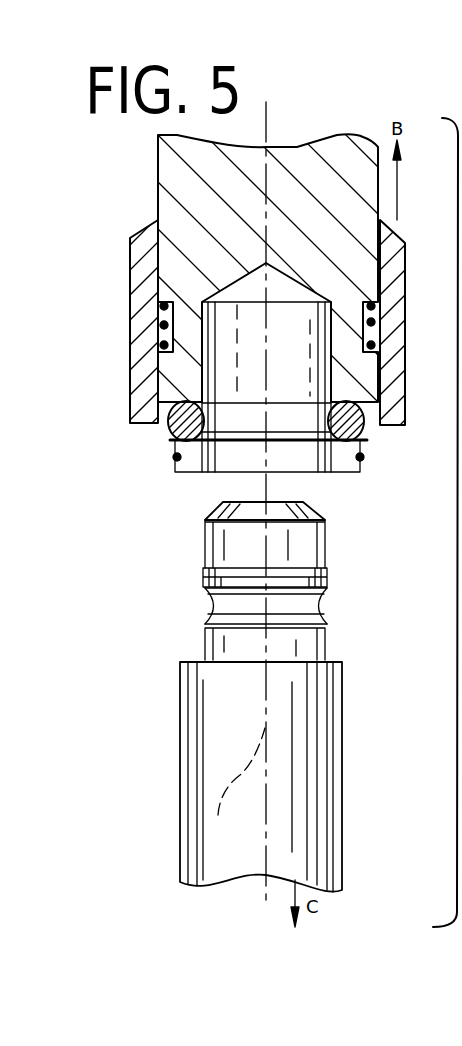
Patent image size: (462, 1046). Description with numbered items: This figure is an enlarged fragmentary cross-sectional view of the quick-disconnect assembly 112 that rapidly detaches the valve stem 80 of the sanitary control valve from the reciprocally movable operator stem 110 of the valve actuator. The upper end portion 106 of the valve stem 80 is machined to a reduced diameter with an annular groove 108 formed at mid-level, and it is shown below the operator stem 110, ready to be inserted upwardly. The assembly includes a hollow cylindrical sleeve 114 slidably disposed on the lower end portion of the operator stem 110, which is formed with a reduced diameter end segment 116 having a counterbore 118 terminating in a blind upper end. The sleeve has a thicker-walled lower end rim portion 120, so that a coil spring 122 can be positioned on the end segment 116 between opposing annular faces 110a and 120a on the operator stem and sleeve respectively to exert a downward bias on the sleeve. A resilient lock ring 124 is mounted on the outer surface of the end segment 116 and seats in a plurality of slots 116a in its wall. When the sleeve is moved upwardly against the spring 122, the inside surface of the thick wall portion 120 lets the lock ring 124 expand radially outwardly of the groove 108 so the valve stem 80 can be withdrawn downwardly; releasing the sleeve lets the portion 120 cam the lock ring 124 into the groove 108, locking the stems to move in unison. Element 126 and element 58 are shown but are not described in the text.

The operator stem 110 is at (158, 192).
The hollow cylindrical sleeve 114 is at (143, 298).
The annular face 110a is at (137, 310).
The annular face 120a is at (153, 340).
The quick-disconnect assembly 112 is at (231, 275).
The reduced diameter end segment 116 is at (163, 392).
The resilient lock ring 124 is at (166, 442).
The counterbore 118 is at (205, 405).
The slots 116a is at (300, 403).
The coil spring 122 is at (376, 318).
The lower end rim portion 120 is at (388, 392).
The retaining ring 126 is at (364, 456).
The upper end portion 106 is at (205, 540).
The annular groove 108 is at (206, 612).
The valve stem 80 is at (333, 804).
The passage axis 58 is at (238, 782).